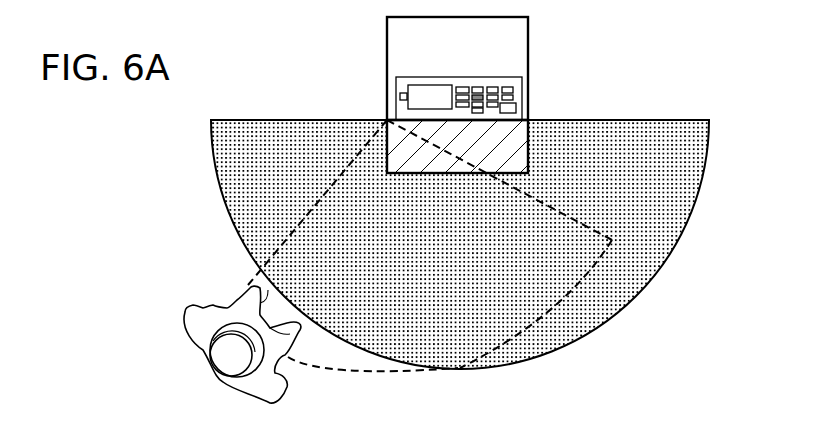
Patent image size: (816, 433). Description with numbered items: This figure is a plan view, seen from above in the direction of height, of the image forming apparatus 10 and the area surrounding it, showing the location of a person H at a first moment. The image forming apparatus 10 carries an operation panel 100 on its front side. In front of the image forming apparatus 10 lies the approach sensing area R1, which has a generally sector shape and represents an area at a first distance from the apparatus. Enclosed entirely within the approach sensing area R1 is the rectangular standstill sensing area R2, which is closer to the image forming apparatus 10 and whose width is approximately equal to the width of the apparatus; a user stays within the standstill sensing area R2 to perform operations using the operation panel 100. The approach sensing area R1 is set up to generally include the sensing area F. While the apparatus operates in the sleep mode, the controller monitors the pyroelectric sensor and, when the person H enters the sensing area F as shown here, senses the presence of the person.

The image forming apparatus 10 is at (523, 40).
The operation panel 100 is at (523, 90).
The standstill sensing area R2 is at (512, 160).
The approach sensing area R1 is at (553, 351).
The person H is at (195, 308).
The sensing area F is at (342, 372).